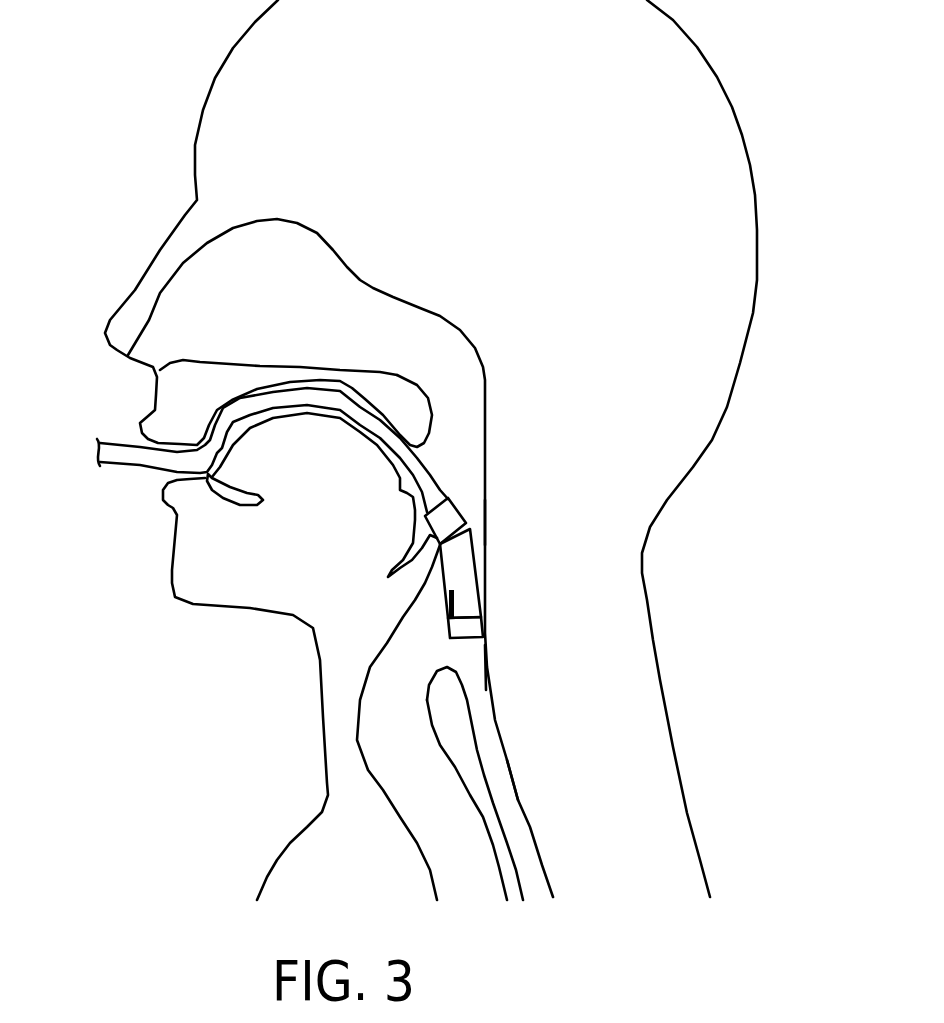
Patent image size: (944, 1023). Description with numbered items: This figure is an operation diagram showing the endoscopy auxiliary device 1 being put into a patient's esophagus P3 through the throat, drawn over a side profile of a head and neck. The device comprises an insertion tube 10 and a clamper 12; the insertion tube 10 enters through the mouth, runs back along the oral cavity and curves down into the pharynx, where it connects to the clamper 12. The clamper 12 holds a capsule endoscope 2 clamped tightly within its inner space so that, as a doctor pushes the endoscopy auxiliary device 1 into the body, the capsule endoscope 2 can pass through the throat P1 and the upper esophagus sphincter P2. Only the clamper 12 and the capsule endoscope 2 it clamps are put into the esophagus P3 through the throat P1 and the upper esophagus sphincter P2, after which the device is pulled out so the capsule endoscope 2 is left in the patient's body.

The insertion tube 10 is at (112, 447).
The clamper 12 is at (467, 537).
The endoscopy auxiliary device 1 is at (477, 565).
The capsule endoscope 2 is at (465, 632).
The throat P1 is at (478, 546).
The upper esophagus sphincter P2 is at (477, 675).
The esophagus P3 is at (502, 795).